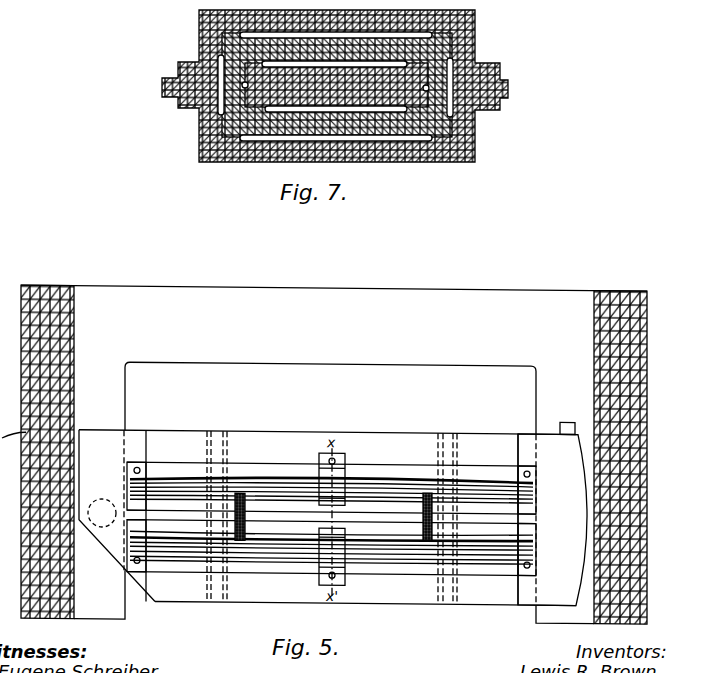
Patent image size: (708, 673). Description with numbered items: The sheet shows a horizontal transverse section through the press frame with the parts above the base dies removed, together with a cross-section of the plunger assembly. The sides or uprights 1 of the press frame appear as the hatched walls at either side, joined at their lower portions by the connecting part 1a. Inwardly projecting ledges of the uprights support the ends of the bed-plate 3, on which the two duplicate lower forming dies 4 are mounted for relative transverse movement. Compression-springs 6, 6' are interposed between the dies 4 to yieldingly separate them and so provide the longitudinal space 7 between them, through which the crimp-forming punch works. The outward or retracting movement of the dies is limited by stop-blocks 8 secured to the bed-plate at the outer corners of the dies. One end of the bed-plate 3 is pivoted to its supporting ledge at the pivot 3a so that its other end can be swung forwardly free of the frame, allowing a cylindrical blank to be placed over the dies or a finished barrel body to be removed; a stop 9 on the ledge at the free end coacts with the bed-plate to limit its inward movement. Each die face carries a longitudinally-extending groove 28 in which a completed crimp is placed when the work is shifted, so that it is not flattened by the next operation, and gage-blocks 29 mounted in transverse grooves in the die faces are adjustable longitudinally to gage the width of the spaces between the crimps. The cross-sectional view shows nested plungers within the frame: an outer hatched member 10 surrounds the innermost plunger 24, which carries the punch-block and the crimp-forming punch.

In FIG. 5, the sides or uprights of the press frame 1 is at (645, 439).
In FIG. 5, the connecting part 1a is at (330, 371).
In FIG. 5, the bed-plate 3 is at (117, 516).
In FIG. 5, the pivot of the bed-plate 3a is at (102, 513).
In FIG. 5, the lower forming dies 4 is at (279, 476).
In FIG. 5, the compression-springs 6 is at (248, 516).
In FIG. 5, the compression-spring 6' is at (414, 517).
In FIG. 7, the longitudinal space 7 is at (358, 2).
In FIG. 5, the longitudinal space 7 is at (364, 514).
In FIG. 5, the stop-blocks 8 is at (137, 465).
In FIG. 5, the stop 9 is at (567, 416).
In FIG. 7, the inner core 10 is at (337, 85).
In FIG. 7, the plunger 24 is at (336, 85).
In FIG. 5, the longitudinally-extending groove 28 is at (251, 476).
In FIG. 5, the gage-blocks 29 is at (340, 474).